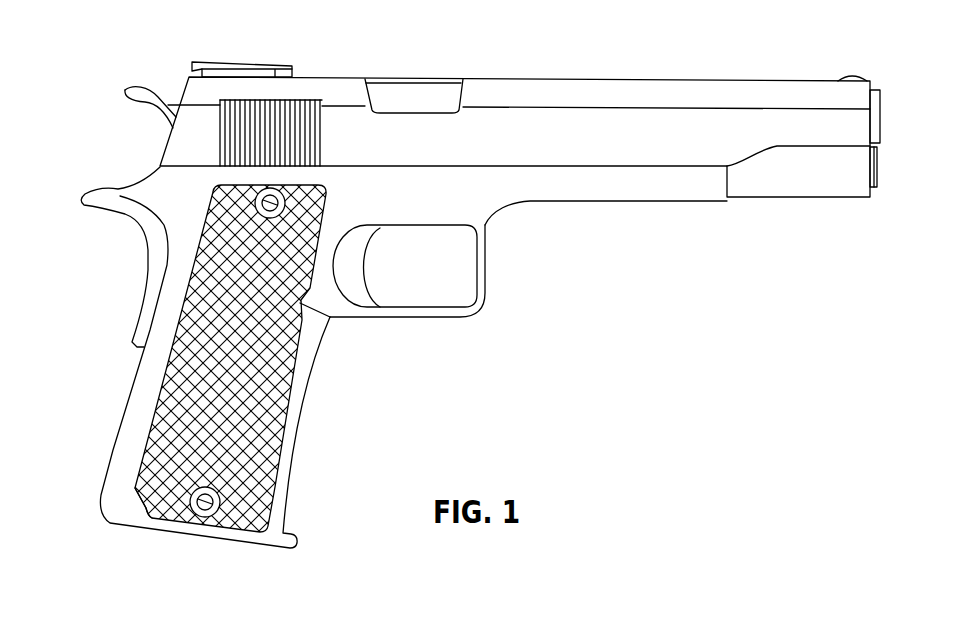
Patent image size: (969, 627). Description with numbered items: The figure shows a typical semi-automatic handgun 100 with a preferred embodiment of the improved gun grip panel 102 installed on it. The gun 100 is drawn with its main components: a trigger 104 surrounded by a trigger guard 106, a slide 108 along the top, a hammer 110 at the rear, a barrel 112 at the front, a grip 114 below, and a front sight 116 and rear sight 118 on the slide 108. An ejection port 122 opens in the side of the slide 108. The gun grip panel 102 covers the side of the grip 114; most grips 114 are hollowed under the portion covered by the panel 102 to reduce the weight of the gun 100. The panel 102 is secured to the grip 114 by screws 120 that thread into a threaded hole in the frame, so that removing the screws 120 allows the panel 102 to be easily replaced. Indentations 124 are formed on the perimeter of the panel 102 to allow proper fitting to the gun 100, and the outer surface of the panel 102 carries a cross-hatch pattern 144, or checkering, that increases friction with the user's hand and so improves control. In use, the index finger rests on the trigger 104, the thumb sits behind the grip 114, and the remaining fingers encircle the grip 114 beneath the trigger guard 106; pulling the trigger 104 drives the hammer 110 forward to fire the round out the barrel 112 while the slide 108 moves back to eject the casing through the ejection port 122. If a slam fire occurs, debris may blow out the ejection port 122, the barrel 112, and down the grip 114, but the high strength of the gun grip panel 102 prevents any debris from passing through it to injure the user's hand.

The semi-automatic handgun 100 is at (572, 252).
The gun grip panel 102 is at (267, 453).
The trigger 104 is at (365, 272).
The trigger guard 106 is at (463, 312).
The slide 108 is at (647, 125).
The hammer 110 is at (135, 102).
The barrel 112 is at (843, 137).
The grip 114 is at (150, 423).
The front sight 116 is at (851, 78).
The rear sight 118 is at (227, 62).
The screws 120 is at (203, 512).
The ejection port 122 is at (407, 95).
The indentations 124 is at (330, 317).
The cross-hatch pattern 144 is at (180, 383).